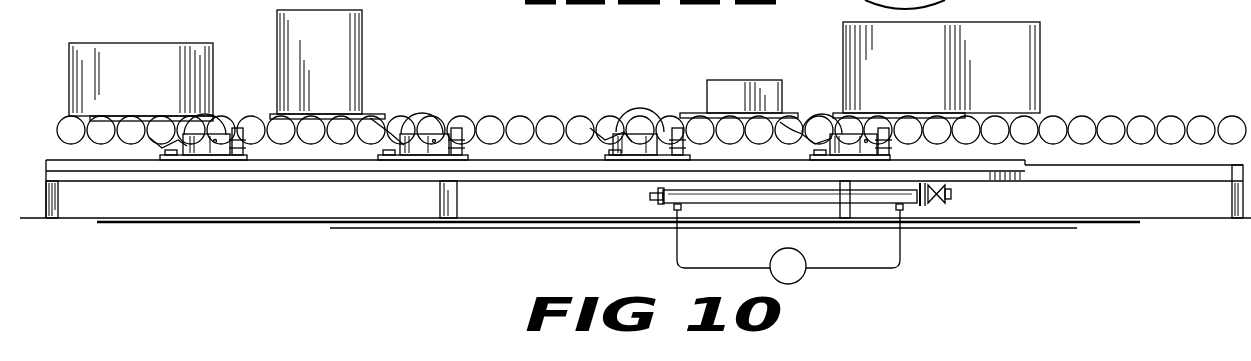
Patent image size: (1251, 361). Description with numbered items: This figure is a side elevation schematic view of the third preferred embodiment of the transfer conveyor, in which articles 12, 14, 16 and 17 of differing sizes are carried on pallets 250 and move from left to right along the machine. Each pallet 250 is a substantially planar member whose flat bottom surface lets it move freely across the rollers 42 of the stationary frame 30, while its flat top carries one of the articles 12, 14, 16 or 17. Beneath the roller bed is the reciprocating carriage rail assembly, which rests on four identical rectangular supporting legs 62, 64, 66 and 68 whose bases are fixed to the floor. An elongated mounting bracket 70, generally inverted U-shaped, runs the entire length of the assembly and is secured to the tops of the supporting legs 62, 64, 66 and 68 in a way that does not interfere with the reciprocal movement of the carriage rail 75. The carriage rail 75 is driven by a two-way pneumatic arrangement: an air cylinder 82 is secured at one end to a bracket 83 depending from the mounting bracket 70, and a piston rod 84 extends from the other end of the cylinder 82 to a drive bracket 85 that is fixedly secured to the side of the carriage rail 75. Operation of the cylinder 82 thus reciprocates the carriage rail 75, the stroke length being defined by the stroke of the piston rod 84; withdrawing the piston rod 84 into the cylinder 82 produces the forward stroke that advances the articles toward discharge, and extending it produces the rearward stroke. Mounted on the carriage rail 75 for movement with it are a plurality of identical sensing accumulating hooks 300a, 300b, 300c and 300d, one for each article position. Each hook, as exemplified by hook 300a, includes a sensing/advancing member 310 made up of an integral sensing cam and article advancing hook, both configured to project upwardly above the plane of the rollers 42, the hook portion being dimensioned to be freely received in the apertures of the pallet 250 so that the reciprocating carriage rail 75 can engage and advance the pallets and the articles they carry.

The article 12 is at (727, 100).
The article 14 is at (340, 31).
The article 16 is at (166, 68).
The article 17 is at (1019, 52).
The stationary frame 30 is at (651, 102).
The rollers 42 is at (496, 117).
The supporting leg 62 is at (53, 219).
The supporting leg 64 is at (440, 223).
The supporting leg 66 is at (838, 221).
The supporting leg 68 is at (1232, 213).
The mounting bracket 70 is at (198, 177).
The carriage rail 75 is at (267, 165).
The air cylinder 82 is at (713, 203).
The bracket 83 is at (925, 210).
The piston rod 84 is at (659, 200).
The drive bracket 85 is at (651, 193).
The pallet 250 is at (161, 117).
The sensing accumulating hook 300a is at (222, 114).
The sensing accumulating hook 300b is at (427, 112).
The sensing accumulating hook 300c is at (628, 108).
The sensing accumulating hook 300d is at (818, 108).
The sensing/advancing member 310 is at (226, 124).